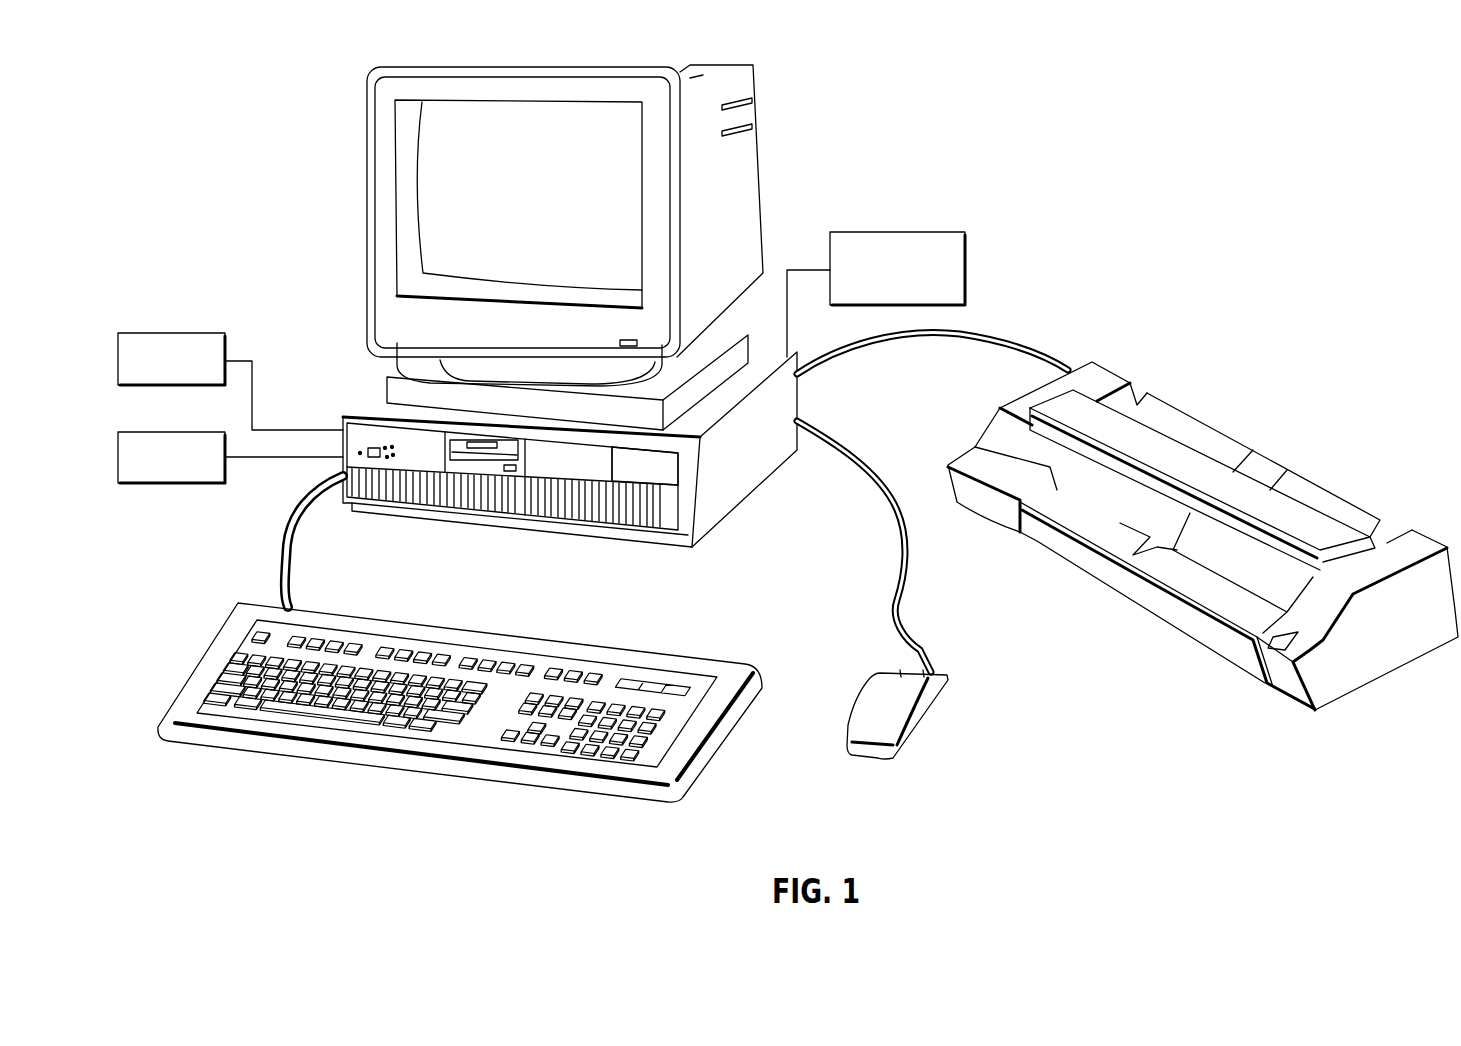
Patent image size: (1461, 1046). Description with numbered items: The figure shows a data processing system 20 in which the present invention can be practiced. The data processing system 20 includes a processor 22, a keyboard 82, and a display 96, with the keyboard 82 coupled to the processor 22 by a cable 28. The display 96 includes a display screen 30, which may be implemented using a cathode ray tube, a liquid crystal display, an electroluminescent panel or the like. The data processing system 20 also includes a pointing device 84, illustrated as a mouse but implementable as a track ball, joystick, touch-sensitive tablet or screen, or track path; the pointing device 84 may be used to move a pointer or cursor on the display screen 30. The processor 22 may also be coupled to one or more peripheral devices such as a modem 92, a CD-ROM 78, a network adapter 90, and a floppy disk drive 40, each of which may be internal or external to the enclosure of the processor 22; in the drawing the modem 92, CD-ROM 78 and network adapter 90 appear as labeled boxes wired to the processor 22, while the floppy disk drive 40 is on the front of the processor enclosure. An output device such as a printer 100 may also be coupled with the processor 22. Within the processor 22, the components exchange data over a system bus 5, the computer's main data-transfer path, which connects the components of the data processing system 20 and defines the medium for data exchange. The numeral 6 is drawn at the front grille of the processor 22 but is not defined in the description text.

The data processing system 20 is at (1013, 167).
The display 96 is at (497, 247).
The display screen 30 is at (489, 231).
The processor 22 is at (646, 471).
The floppy disk drive 40 is at (483, 460).
The vent grille 6 is at (607, 513).
The system bus 5 is at (622, 490).
The modem 92 is at (176, 332).
The CD-ROM 78 is at (184, 484).
The network adapter 90 is at (888, 230).
The cable 28 is at (287, 537).
The keyboard 82 is at (398, 780).
The pointing device 84 is at (937, 700).
The printer 100 is at (1125, 365).